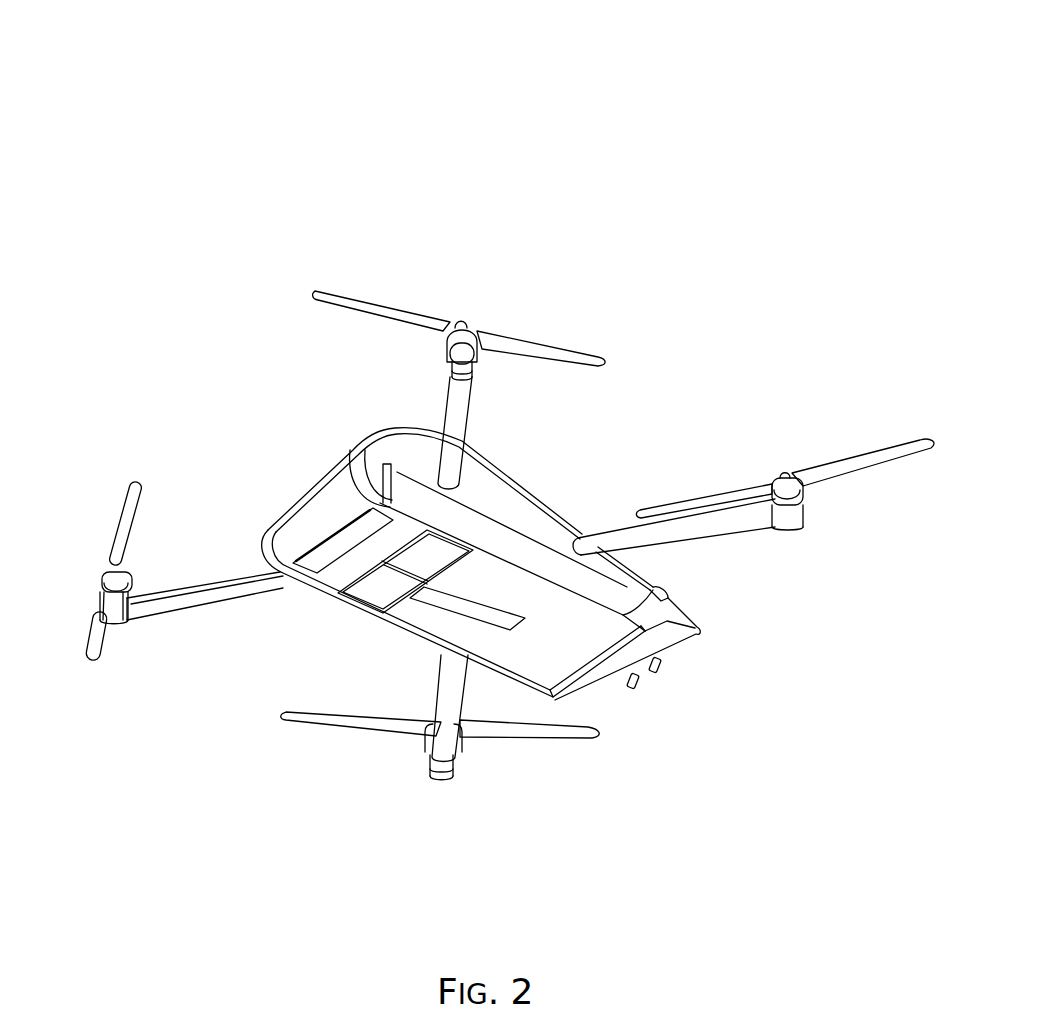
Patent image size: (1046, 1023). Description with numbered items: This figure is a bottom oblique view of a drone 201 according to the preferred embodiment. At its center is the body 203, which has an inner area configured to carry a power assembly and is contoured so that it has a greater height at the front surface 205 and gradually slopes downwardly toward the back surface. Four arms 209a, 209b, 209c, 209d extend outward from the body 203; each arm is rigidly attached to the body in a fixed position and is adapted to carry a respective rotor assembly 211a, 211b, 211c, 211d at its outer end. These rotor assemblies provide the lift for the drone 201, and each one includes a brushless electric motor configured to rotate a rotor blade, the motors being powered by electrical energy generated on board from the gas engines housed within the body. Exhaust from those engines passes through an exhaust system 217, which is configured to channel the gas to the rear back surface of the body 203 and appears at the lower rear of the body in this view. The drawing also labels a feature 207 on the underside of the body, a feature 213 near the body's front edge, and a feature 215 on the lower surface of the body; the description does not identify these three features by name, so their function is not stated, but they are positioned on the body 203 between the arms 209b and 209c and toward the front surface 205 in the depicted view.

The drone 201 is at (822, 97).
The body 203 is at (527, 490).
The front surface 205 is at (246, 397).
The bottom portion 207 is at (724, 667).
The arm 209a is at (465, 430).
The arm 209b is at (214, 603).
The arm 209c is at (427, 705).
The arm 209d is at (733, 540).
The rotor assembly 211a is at (390, 300).
The rotor assembly 211b is at (115, 521).
The rotor assembly 211c is at (528, 742).
The rotor assembly 211d is at (858, 456).
The rim 213 is at (290, 493).
The access panel 215 is at (443, 567).
The exhaust system 217 is at (640, 689).